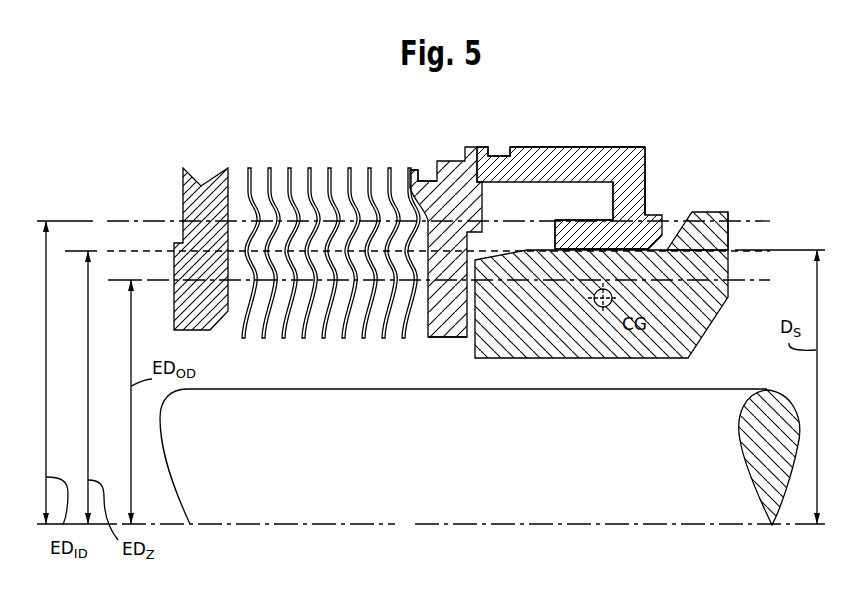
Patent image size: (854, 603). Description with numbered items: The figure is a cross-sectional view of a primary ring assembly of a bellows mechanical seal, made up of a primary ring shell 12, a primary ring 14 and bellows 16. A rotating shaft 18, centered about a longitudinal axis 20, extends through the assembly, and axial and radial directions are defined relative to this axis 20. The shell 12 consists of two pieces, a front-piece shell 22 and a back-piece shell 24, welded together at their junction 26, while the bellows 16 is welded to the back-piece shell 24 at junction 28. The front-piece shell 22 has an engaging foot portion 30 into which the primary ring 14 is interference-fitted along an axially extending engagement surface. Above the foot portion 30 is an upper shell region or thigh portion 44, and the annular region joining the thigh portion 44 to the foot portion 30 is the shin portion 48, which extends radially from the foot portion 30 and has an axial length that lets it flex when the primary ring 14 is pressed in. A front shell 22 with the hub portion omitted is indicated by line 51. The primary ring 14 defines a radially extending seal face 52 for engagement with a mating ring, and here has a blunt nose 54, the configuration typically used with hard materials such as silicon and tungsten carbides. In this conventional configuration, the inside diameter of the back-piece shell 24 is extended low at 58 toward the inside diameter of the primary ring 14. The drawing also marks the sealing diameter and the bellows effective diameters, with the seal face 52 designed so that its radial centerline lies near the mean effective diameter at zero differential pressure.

The primary ring shell 12 is at (523, 147).
The primary ring 14 is at (715, 212).
The bellows 16 is at (333, 171).
The rotating shaft 18 is at (358, 389).
The longitudinal axis 20 is at (497, 525).
The front-piece shell 22 is at (570, 147).
The back-piece shell 24 is at (457, 161).
The junction 26 is at (478, 147).
The junction 28 is at (410, 170).
The engaging foot portion 30 is at (597, 220).
The thigh portion 44 is at (618, 147).
The shin portion 48 is at (647, 183).
The line showing front shell with hub portion omitted 51 is at (641, 147).
The seal face 52 is at (728, 233).
The blunt nose 54 is at (707, 327).
The extended inside diameter of back-piece shell 58 is at (455, 338).